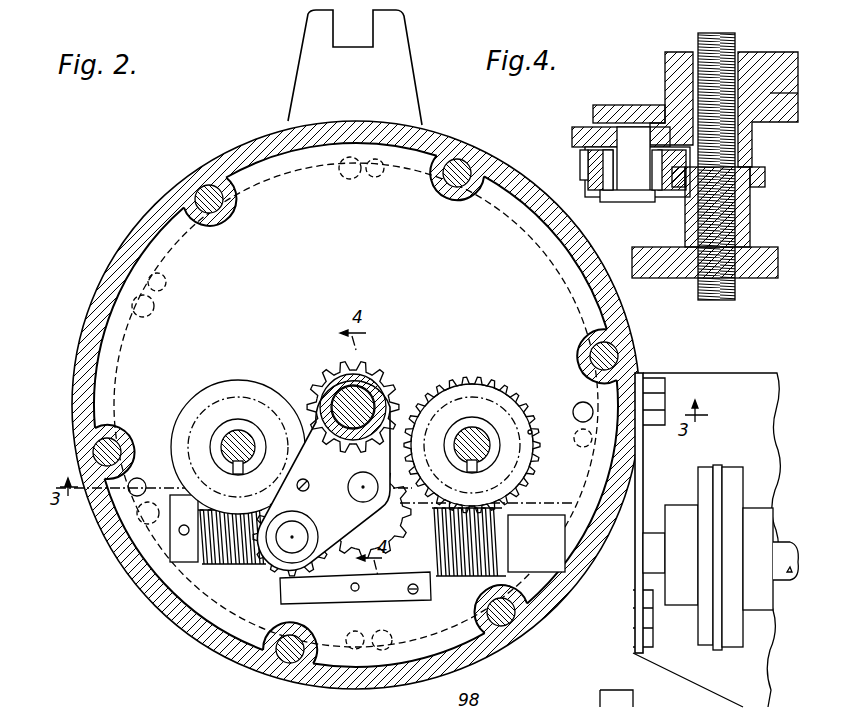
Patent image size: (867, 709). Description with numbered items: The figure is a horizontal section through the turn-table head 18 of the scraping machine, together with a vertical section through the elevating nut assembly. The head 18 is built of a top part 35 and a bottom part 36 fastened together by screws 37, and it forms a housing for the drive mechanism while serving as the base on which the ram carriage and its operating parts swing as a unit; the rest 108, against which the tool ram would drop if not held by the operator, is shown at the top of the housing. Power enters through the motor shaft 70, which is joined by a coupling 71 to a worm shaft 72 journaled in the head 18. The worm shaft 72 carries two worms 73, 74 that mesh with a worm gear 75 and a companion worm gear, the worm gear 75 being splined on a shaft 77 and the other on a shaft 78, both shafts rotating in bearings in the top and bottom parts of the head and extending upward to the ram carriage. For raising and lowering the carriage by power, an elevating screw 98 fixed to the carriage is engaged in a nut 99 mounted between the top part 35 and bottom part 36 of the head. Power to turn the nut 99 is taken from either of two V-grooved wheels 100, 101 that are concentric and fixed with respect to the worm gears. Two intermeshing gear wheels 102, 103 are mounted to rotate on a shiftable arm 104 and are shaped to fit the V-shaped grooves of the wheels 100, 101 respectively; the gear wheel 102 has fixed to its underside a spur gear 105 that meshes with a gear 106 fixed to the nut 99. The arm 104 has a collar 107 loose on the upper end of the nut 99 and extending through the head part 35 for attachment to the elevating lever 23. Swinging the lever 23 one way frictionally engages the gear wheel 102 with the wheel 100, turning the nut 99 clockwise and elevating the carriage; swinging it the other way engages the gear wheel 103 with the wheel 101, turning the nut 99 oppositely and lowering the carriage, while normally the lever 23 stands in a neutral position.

In FIG. 2, the turn-table head 18 is at (88, 314).
In FIG. 2, the screws 37 is at (209, 184).
In FIG. 2, the rest 108 is at (390, 47).
In FIG. 2, the grooved wheel 101 is at (182, 412).
In FIG. 2, the shaft 78 is at (235, 430).
In FIG. 2, the gear 106 is at (328, 385).
In FIG. 4, the gear 106 is at (678, 186).
In FIG. 2, the elevating screw 98 is at (364, 390).
In FIG. 4, the elevating screw 98 is at (714, 34).
In FIG. 2, the nut 99 is at (381, 383).
In FIG. 4, the nut 99 is at (750, 217).
In FIG. 2, the collar 107 is at (391, 418).
In FIG. 4, the collar 107 is at (688, 52).
In FIG. 2, the shaft 77 is at (472, 432).
In FIG. 2, the worm gear 75 is at (510, 397).
In FIG. 2, the grooved wheel 100 is at (532, 430).
In FIG. 2, the worm 74 is at (258, 566).
In FIG. 2, the shiftable arm 104 is at (283, 562).
In FIG. 4, the shiftable arm 104 is at (573, 133).
In FIG. 2, the gear wheel 103 is at (325, 590).
In FIG. 2, the gear wheel 102 is at (404, 522).
In FIG. 4, the gear wheel 102 is at (580, 160).
In FIG. 2, the worm 73 is at (454, 580).
In FIG. 2, the worm shaft 72 is at (648, 538).
In FIG. 2, the coupling 71 is at (733, 477).
In FIG. 2, the motor shaft 70 is at (787, 546).
In FIG. 4, the top part 35 is at (637, 104).
In FIG. 4, the lever 23 is at (783, 55).
In FIG. 4, the spur gear 105 is at (599, 192).
In FIG. 4, the bottom part 36 is at (764, 279).